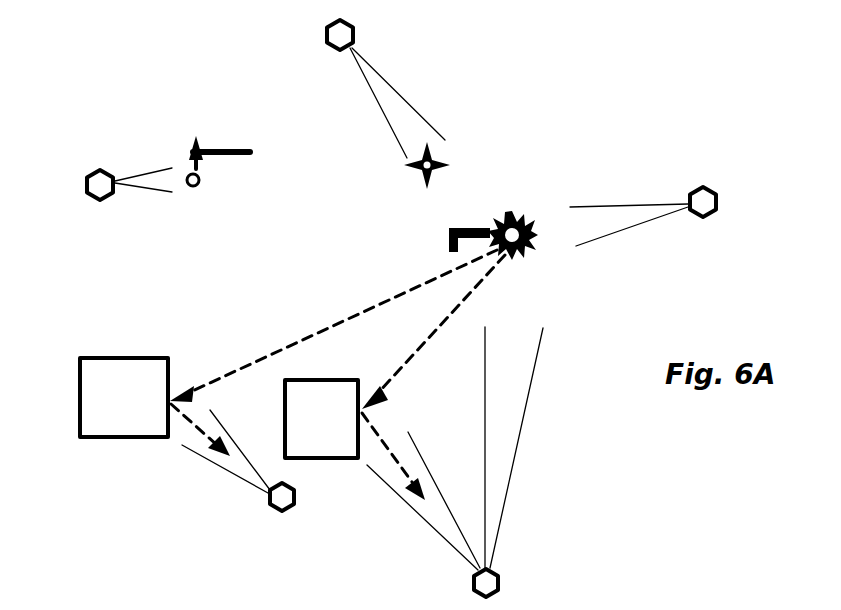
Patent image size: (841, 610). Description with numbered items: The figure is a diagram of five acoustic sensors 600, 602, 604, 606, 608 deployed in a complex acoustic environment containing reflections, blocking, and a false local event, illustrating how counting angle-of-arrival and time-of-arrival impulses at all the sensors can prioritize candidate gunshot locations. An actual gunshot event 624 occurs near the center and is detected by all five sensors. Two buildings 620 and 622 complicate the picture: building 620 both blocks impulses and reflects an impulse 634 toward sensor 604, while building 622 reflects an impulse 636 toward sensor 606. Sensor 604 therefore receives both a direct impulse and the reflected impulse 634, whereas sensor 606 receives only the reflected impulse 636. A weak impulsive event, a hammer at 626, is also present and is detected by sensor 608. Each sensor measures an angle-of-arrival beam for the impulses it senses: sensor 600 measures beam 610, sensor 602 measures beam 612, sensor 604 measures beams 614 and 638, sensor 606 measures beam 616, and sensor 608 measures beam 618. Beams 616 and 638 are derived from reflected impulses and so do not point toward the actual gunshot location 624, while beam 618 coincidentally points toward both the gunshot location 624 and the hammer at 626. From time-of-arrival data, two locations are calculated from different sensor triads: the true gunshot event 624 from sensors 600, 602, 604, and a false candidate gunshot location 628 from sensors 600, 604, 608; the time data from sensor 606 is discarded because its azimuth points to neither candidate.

The sensor 600 is at (326, 34).
The sensor 602 is at (716, 191).
The sensor 604 is at (470, 584).
The sensor 606 is at (272, 512).
The sensor 608 is at (92, 172).
The beam 610 is at (368, 82).
The beam 612 is at (606, 206).
The beam 614 is at (519, 438).
The beam 616 is at (245, 476).
The beam 618 is at (138, 173).
The building 620 is at (321, 419).
The building 622 is at (124, 397).
The gunshot event 624 is at (505, 258).
The hammer 626 is at (200, 188).
The candidate gunshot location 628 is at (444, 162).
The reflected impulse 634 is at (400, 366).
The reflected impulse 636 is at (318, 331).
The beam 638 is at (422, 520).